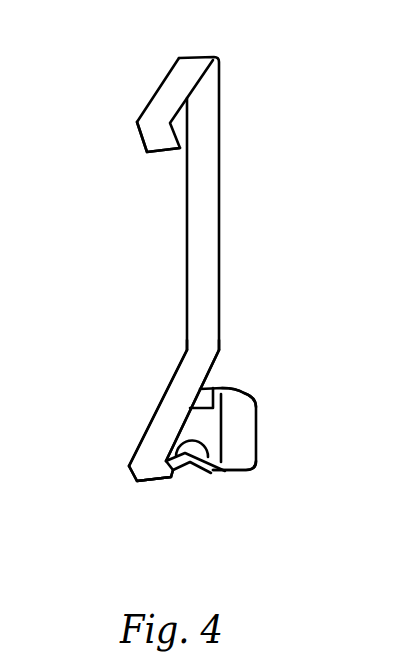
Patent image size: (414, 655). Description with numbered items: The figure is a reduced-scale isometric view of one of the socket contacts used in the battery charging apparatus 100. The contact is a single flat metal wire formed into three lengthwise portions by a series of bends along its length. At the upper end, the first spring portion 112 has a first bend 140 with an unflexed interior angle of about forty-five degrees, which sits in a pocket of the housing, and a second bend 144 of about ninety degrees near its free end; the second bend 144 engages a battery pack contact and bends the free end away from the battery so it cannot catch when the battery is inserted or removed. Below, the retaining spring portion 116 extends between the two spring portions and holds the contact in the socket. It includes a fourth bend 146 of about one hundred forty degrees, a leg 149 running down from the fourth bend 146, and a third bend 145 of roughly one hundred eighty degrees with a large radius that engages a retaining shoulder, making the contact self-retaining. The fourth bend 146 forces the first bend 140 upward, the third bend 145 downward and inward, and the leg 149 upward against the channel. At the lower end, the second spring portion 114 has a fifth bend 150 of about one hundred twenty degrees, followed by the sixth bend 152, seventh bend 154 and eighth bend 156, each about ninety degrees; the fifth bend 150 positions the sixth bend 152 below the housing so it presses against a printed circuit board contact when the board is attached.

The battery charging apparatus 100 is at (274, 203).
The first bend 140 is at (202, 55).
The first spring portion 112 is at (177, 85).
The second bend 144 is at (138, 126).
The fourth bend 146 is at (205, 348).
The leg 149 is at (173, 397).
The retaining spring portion 116 is at (147, 449).
The third bend 145 is at (147, 470).
The fifth bend 150 is at (209, 460).
The second spring portion 114 is at (238, 442).
The eighth bend 156 is at (213, 390).
The seventh bend 154 is at (243, 407).
The sixth bend 152 is at (238, 472).